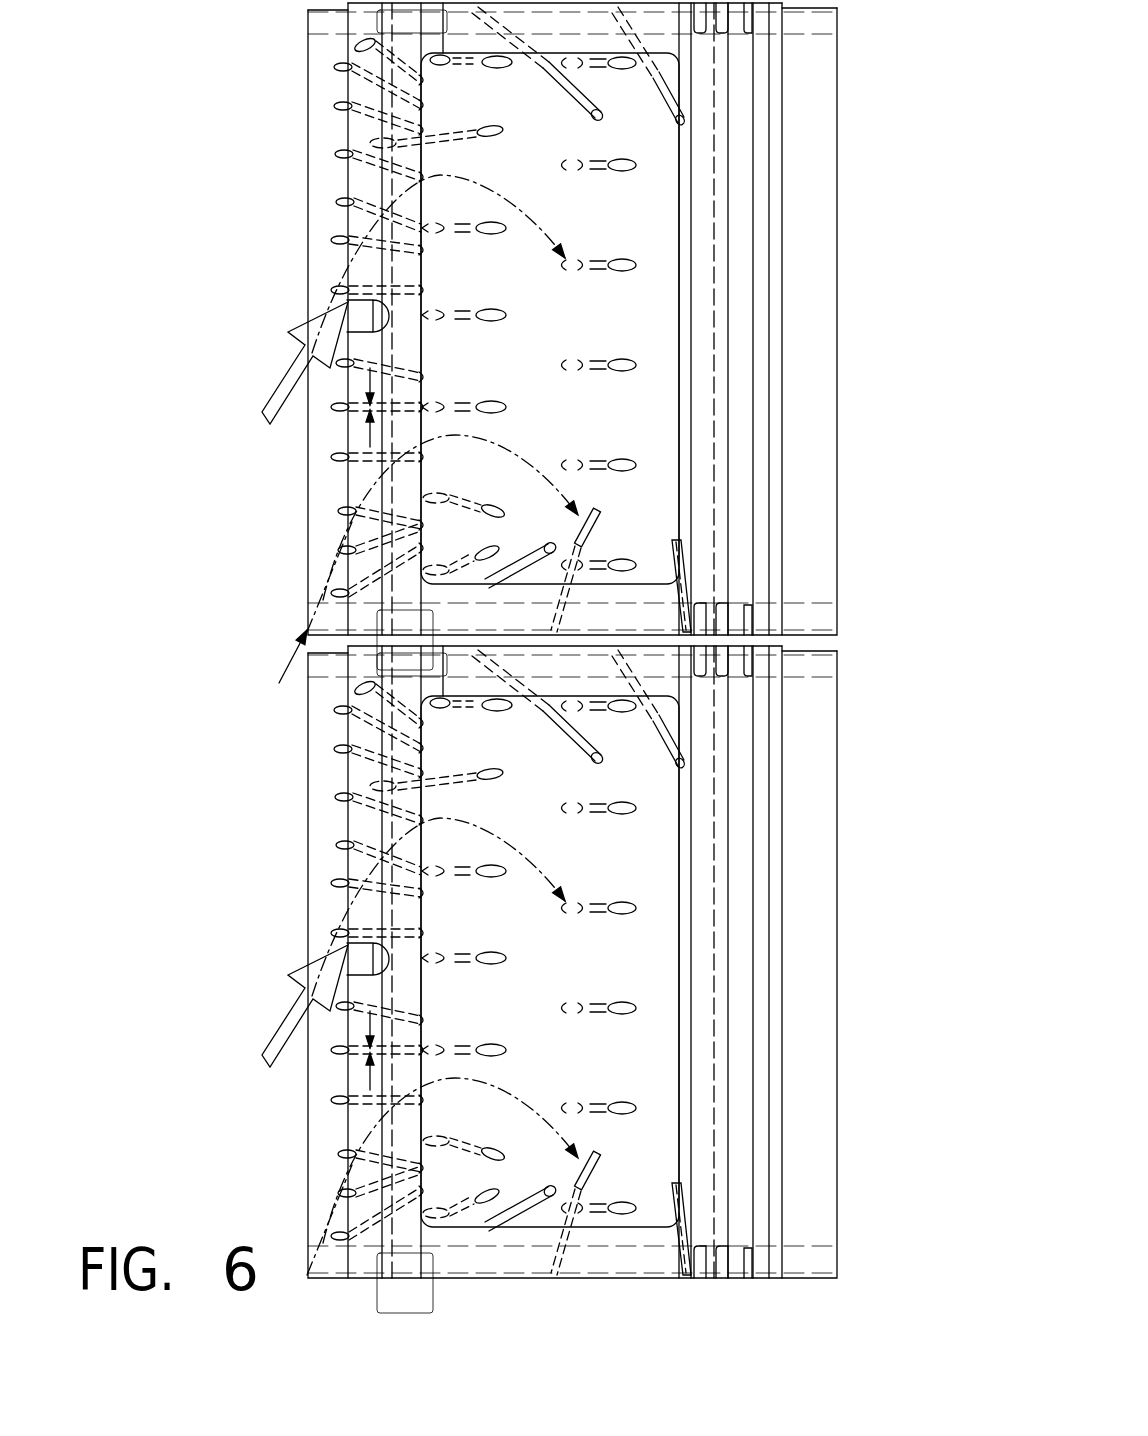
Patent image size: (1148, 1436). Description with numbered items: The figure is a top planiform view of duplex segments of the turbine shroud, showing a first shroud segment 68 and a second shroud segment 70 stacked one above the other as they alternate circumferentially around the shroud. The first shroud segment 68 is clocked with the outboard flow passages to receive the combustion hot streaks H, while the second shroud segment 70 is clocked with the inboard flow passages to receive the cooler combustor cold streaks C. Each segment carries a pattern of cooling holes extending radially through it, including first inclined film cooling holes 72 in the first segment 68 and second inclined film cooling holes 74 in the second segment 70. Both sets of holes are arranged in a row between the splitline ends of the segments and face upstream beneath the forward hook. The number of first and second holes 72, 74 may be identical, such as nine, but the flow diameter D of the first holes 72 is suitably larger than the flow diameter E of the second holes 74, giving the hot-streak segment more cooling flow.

The first shroud segment 68 is at (838, 998).
The second shroud segment 70 is at (838, 298).
The first inclined film cooling hole 72 is at (427, 866).
The second inclined film cooling hole 74 is at (427, 223).
The combustor cold streak C is at (288, 362).
The flow diameter of the first holes D is at (370, 1088).
The flow diameter of the second holes E is at (370, 445).
The combustor hot streak H is at (288, 1005).